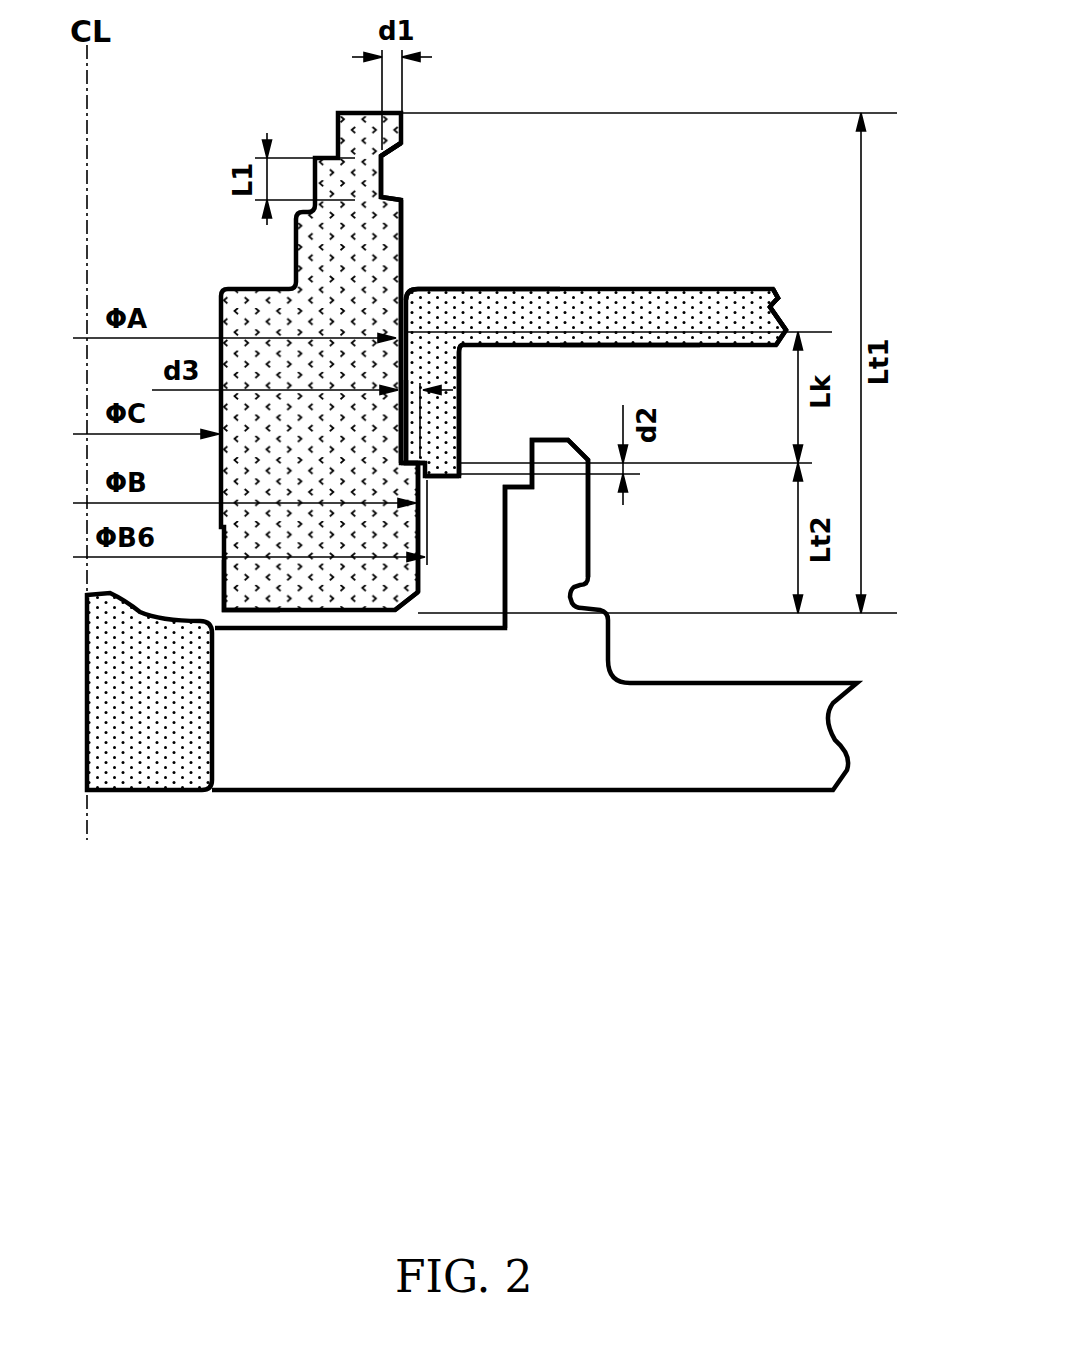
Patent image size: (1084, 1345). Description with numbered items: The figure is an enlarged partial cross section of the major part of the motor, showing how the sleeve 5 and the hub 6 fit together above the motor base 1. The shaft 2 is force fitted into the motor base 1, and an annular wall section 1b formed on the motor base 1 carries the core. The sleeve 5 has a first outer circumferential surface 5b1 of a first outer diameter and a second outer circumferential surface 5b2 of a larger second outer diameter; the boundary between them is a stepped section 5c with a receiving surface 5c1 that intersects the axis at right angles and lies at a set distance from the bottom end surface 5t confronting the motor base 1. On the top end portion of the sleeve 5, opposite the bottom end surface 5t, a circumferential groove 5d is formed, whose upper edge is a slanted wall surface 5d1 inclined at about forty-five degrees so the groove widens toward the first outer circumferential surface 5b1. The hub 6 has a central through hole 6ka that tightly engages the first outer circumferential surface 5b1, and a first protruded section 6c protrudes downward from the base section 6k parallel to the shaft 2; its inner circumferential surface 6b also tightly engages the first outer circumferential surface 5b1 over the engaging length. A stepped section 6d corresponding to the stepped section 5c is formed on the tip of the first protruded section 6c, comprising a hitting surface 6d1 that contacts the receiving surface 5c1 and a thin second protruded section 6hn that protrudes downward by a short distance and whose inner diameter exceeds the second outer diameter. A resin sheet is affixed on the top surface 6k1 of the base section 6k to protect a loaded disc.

The motor base 1 is at (534, 664).
The annular wall section 1b is at (557, 520).
The shaft 2 is at (135, 765).
The sleeve 5 is at (268, 288).
The bottom end surface 5t is at (224, 588).
The first outer circumferential surface 5b1 is at (398, 433).
The stepped section 5c is at (404, 463).
The receiving surface 5c1 is at (412, 472).
The second outer circumferential surface 5b2 is at (420, 572).
The circumferential groove 5d is at (418, 145).
The wall surface 5d1 is at (406, 150).
The hub 6 is at (648, 290).
The inner circumferential surface 6b is at (410, 350).
The first protruded section 6c is at (550, 333).
The stepped section 6d is at (460, 434).
The hitting surface 6d1 is at (418, 455).
The second protruded section 6hn is at (433, 481).
The base section 6k is at (745, 312).
The top surface 6k1 is at (705, 290).
The through hole 6ka is at (410, 297).